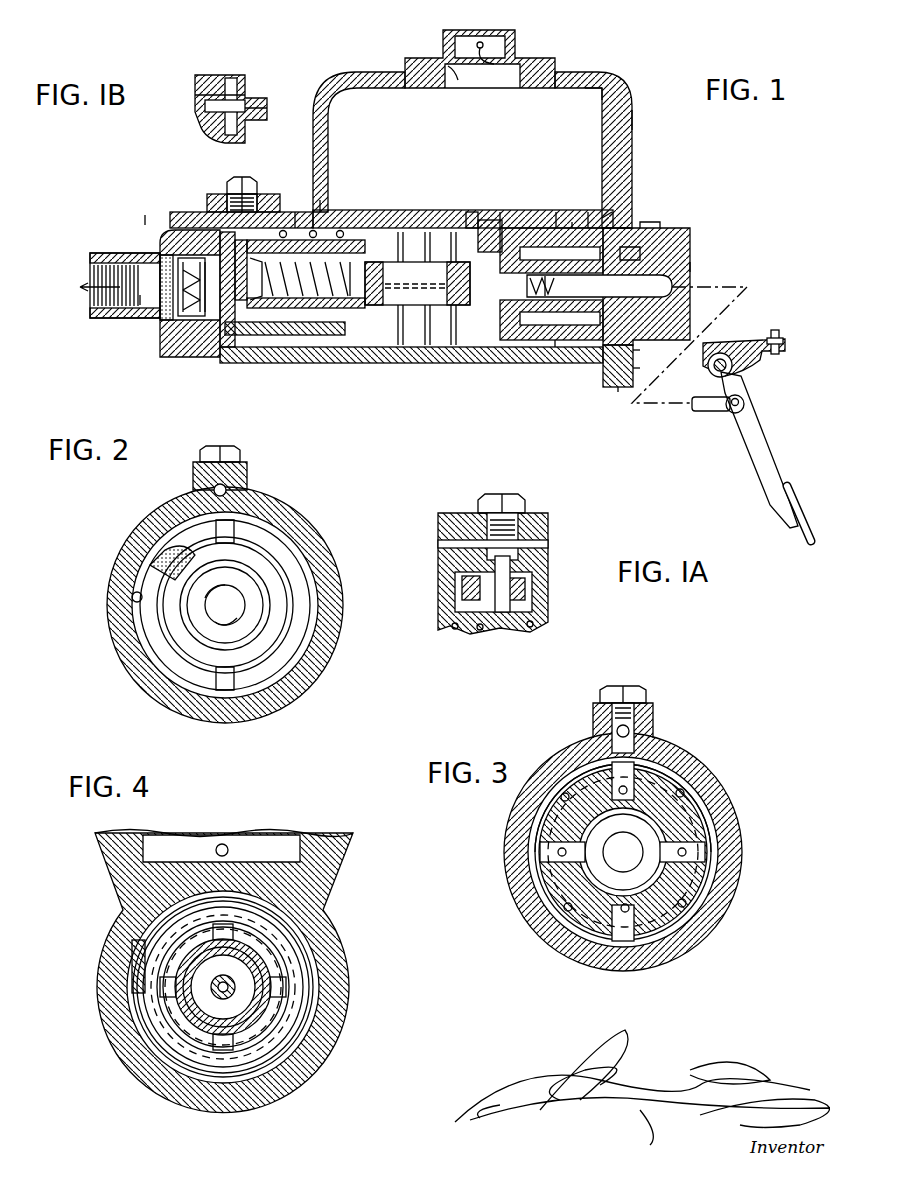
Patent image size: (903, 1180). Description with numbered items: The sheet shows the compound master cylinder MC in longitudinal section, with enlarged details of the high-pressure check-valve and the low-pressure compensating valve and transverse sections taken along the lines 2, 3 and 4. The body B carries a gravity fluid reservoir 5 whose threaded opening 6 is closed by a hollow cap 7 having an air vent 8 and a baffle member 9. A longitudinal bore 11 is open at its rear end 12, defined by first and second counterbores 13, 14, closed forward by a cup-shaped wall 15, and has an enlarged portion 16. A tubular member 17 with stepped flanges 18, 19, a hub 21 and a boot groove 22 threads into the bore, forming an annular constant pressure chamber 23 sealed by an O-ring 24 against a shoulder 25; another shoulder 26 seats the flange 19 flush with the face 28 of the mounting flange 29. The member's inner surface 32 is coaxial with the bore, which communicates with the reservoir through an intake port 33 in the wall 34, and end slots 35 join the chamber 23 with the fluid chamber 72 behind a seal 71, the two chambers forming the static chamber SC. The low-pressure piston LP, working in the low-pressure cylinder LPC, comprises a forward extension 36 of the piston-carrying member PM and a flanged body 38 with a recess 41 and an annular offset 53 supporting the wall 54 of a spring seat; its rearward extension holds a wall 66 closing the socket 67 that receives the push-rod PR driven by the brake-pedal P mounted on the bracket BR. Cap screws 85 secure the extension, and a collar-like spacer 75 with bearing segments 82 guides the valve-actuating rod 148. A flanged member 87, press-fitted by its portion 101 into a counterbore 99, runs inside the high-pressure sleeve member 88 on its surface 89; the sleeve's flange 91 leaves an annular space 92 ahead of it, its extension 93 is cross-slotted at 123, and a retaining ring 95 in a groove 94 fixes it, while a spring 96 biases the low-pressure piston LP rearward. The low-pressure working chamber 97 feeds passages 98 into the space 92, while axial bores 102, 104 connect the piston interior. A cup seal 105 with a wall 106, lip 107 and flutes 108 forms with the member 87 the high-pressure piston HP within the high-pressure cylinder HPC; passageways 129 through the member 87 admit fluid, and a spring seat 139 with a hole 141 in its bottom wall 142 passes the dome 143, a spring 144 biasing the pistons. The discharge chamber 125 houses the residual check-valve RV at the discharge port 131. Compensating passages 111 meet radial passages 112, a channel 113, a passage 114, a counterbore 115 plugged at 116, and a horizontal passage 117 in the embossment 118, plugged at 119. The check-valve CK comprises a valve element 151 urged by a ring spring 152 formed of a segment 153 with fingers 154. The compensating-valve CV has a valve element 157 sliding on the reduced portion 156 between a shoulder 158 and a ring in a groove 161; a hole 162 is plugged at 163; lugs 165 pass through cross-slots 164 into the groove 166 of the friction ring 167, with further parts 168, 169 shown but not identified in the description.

In FIG. 1, the section line 2— 2 is at (218, 179).
In FIG. 1, the section line 3— 3 is at (252, 172).
In FIG. 1, the section line 4— 4 is at (370, 212).
In FIG. 1, the fluid reservoir 5 is at (606, 94).
In FIG. 4, the fluid reservoir 5 is at (157, 840).
In FIG. 1, the internally threaded opening 6 is at (584, 86).
In FIG. 1, the hollow cap 7 is at (516, 38).
In FIG. 1, the air vent 8 is at (491, 58).
In FIG. 1, the baffle member 9 is at (451, 73).
In FIG. 1, the longitudinal bore 11 is at (557, 212).
In FIG. 2, the longitudinal bore 11 is at (132, 598).
In FIG. 3, the longitudinal bore 11 is at (690, 852).
In FIG. 4, the longitudinal bore 11 is at (300, 922).
In FIG. 1, the open end 12 is at (589, 212).
In FIG. 1, the first counterbore 13 is at (650, 230).
In FIG. 1, the second counterbore 14 is at (626, 228).
In FIG. 1, the cup-shaped wall 15 is at (150, 310).
In FIG. 1, the enlarged diameter portion 16 is at (330, 347).
In FIG. 1, the tubular member 17 is at (573, 222).
In FIG. 1, the threaded flange 18 is at (600, 350).
In FIG. 1, the circular flange 19 is at (634, 352).
In FIG. 1, the hollow hub 21 is at (690, 236).
In FIG. 1, the external annular groove 22 is at (665, 228).
In FIG. 1, the constant pressure fluid chamber 23 is at (556, 350).
In FIG. 1, the packing 24 is at (612, 214).
In FIG. 1, the internal annular shoulder 25 is at (596, 253).
In FIG. 1, the internal annular shoulder 26 is at (634, 368).
In FIG. 1, the face 28 is at (633, 122).
In FIG. 1, the mounting flange 29 is at (618, 390).
In FIG. 1, the inner finished cylindrical surface 32 is at (691, 268).
In FIG. 1, the intake port 33 is at (506, 212).
In FIG. 1, the wall 34 is at (534, 212).
In FIG. 1, the slots 35 is at (545, 294).
In FIG. 1, the forward cylindrical extension 36 is at (440, 247).
In FIG. 1B, the forward cylindrical extension 36 is at (245, 130).
In FIG. 4, the forward cylindrical extension 36 is at (185, 1000).
In FIG. 1, the flanged body 38 is at (500, 212).
In FIG. 1, the peripheral recess 41 is at (472, 212).
In FIG. 1, the annular offset 53 is at (642, 256).
In FIG. 1, the horizontal wall 54 is at (467, 327).
In FIG. 1, the wall 66 is at (543, 286).
In FIG. 1, the socket 67 is at (566, 315).
In FIG. 1, the single-lip annular seal 71 is at (620, 278).
In FIG. 1, the constant pressure fluid chamber 72 is at (586, 286).
In FIG. 1, the collar-like spacer 75 is at (453, 328).
In FIG. 1, the segments 82 is at (431, 332).
In FIG. 1, the cap screws 85 is at (528, 315).
In FIG. 1B, the flanged member 87 is at (221, 152).
In FIG. 1, the sleeve member 88 is at (347, 347).
In FIG. 1B, the sleeve member 88 is at (210, 75).
In FIG. 1A, the sleeve member 88 is at (535, 628).
In FIG. 3, the sleeve member 88 is at (660, 935).
In FIG. 4, the sleeve member 88 is at (250, 905).
In FIG. 1B, the inner finished surface 89 is at (197, 88).
In FIG. 1, the outstanding flange 91 is at (262, 212).
In FIG. 1A, the outstanding flange 91 is at (505, 573).
In FIG. 3, the outstanding flange 91 is at (590, 940).
In FIG. 1, the annular space 92 is at (258, 347).
In FIG. 1A, the annular space 92 is at (485, 612).
In FIG. 1, the reduced diameter extension 93 is at (273, 279).
In FIG. 2, the reduced diameter extension 93 is at (165, 632).
In FIG. 3, the reduced diameter extension 93 is at (665, 885).
In FIG. 1, the internal annular groove 94 is at (296, 212).
In FIG. 1, the split retaining ring 95 is at (314, 279).
In FIG. 1, the compression spring 96 is at (455, 350).
In FIG. 4, the compression spring 96 is at (300, 950).
In FIG. 1, the low-pressure working chamber 97 is at (432, 350).
In FIG. 1, the passages 98 is at (245, 340).
In FIG. 3, the passages 98 is at (578, 788).
In FIG. 1, the counterbore 99 is at (390, 247).
In FIG. 4, the counterbore 99 is at (132, 955).
In FIG. 1, the reduced diameter portion 101 is at (423, 325).
In FIG. 4, the reduced diameter portion 101 is at (290, 1020).
In FIG. 1, the axial bore 102 is at (364, 270).
In FIG. 4, the axial bore 102 is at (258, 1045).
In FIG. 1, the axial bore 104 is at (415, 295).
In FIG. 1B, the cup seal 105 is at (198, 115).
In FIG. 1, the vertical wall 106 is at (352, 240).
In FIG. 1, the peripheral lip 107 is at (330, 240).
In FIG. 1B, the longitudinal flutes 108 is at (198, 102).
In FIG. 1B, the compensating passages 111 is at (198, 80).
In FIG. 1A, the compensating passages 111 is at (548, 608).
In FIG. 3, the compensating passages 111 is at (635, 950).
In FIG. 4, the compensating passages 111 is at (215, 905).
In FIG. 1, the radial passages 112 is at (248, 255).
In FIG. 1A, the radial passages 112 is at (540, 550).
In FIG. 3, the radial passages 112 is at (705, 870).
In FIG. 1A, the annular fluid channel 113 is at (460, 568).
In FIG. 3, the annular fluid channel 113 is at (685, 830).
In FIG. 1A, the passage 114 is at (535, 540).
In FIG. 3, the passage 114 is at (645, 748).
In FIG. 1A, the vertical counterbore 115 is at (520, 530).
In FIG. 3, the vertical counterbore 115 is at (596, 730).
In FIG. 1, the closure plug 116 is at (312, 233).
In FIG. 1A, the closure plug 116 is at (500, 494).
In FIG. 2, the closure plug 116 is at (200, 455).
In FIG. 3, the closure plug 116 is at (600, 690).
In FIG. 1, the horizontal passage 117 is at (321, 200).
In FIG. 1A, the horizontal passage 117 is at (438, 545).
In FIG. 2, the horizontal passage 117 is at (227, 489).
In FIG. 3, the horizontal passage 117 is at (630, 732).
In FIG. 4, the horizontal passage 117 is at (229, 850).
In FIG. 1A, the longitudinal embossment 118 is at (450, 513).
In FIG. 2, the longitudinal embossment 118 is at (194, 470).
In FIG. 3, the longitudinal embossment 118 is at (593, 710).
In FIG. 1, the closure plug 119 is at (160, 212).
In FIG. 1, the cross-slots 123 is at (252, 279).
In FIG. 1A, the cross-slots 123 is at (475, 605).
In FIG. 2, the cross-slots 123 is at (218, 655).
In FIG. 1, the discharge chamber 125 is at (208, 322).
In FIG. 1B, the fluid passageways 129 is at (205, 135).
In FIG. 1, the discharge port 131 is at (108, 305).
In FIG. 2, the spring seat 139 is at (238, 655).
In FIG. 3, the spring seat 139 is at (580, 915).
In FIG. 2, the central hole 141 is at (180, 645).
In FIG. 2, the bottom wall 142 is at (208, 628).
In FIG. 2, the dome-shaped embossment 143 is at (268, 635).
In FIG. 3, the dome-shaped embossment 143 is at (675, 868).
In FIG. 1A, the compression spring 144 is at (490, 618).
In FIG. 2, the compression spring 144 is at (252, 586).
In FIG. 3, the compression spring 144 is at (665, 846).
In FIG. 1, the extension 148 is at (409, 315).
In FIG. 4, the extension 148 is at (215, 1010).
In FIG. 1, the valve-forming element 151 is at (238, 194).
In FIG. 1A, the ring-like spring 152 is at (510, 628).
In FIG. 2, the ring-like spring 152 is at (262, 531).
In FIG. 1A, the annular segment 153 is at (462, 588).
In FIG. 2, the annular segment 153 is at (148, 620).
In FIG. 1A, the yieldable fingers 154 is at (470, 600).
In FIG. 1B, the reduced portion 156 is at (255, 105).
In FIG. 1, the valve-forming element 157 is at (412, 350).
In FIG. 1B, the valve-forming element 157 is at (242, 75).
In FIG. 4, the valve-forming element 157 is at (290, 975).
In FIG. 1B, the annular shoulder 158 is at (222, 75).
In FIG. 1B, the broken annular groove 161 is at (278, 91).
In FIG. 1, the hole 162 is at (292, 347).
In FIG. 1, the threaded plug 163 is at (322, 350).
In FIG. 1B, the cross-slots 164 is at (231, 78).
In FIG. 4, the cross-slots 164 is at (275, 1000).
In FIG. 1B, the lugs 165 is at (274, 110).
In FIG. 4, the lugs 165 is at (286, 987).
In FIG. 4, the annular groove 166 is at (300, 1050).
In FIG. 1B, the actuating member 167 is at (188, 121).
In FIG. 4, the actuating member 167 is at (195, 1010).
In FIG. 1B, the seat 168 is at (255, 125).
In FIG. 1B, the spring 169 is at (244, 152).
In FIG. 1, the body B is at (623, 154).
In FIG. 2, the body B is at (149, 505).
In FIG. 3, the body B is at (724, 930).
In FIG. 4, the body B is at (348, 861).
In FIG. 2, the compound master cylinder MC is at (112, 523).
In FIG. 3, the compound master cylinder MC is at (718, 740).
In FIG. 4, the compound master cylinder MC is at (304, 1098).
In FIG. 1, the high-pressure check-valve means CK is at (200, 212).
In FIG. 1A, the high-pressure check-valve means CK is at (478, 632).
In FIG. 2, the high-pressure check-valve means CK is at (141, 560).
In FIG. 1B, the low-pressure compensating-valve means CV is at (262, 83).
In FIG. 1, the residual pressure check-valve RV is at (185, 318).
In FIG. 1, the piston-carrying member PM is at (422, 279).
In FIG. 1B, the piston-carrying member PM is at (267, 115).
In FIG. 4, the piston-carrying member PM is at (175, 940).
In FIG. 1, the high-pressure piston HP is at (170, 135).
In FIG. 1, the high-pressure cylinder HPC is at (306, 274).
In FIG. 1A, the high-pressure cylinder HPC is at (540, 575).
In FIG. 1, the low-pressure piston LP is at (535, 348).
In FIG. 1, the low-pressure cylinder LPC is at (505, 348).
In FIG. 1, the static chamber SC is at (528, 212).
In FIG. 1, the push-rod PR is at (660, 296).
In FIG. 1, the bracket BR is at (777, 330).
In FIG. 1, the brake-pedal P is at (758, 432).